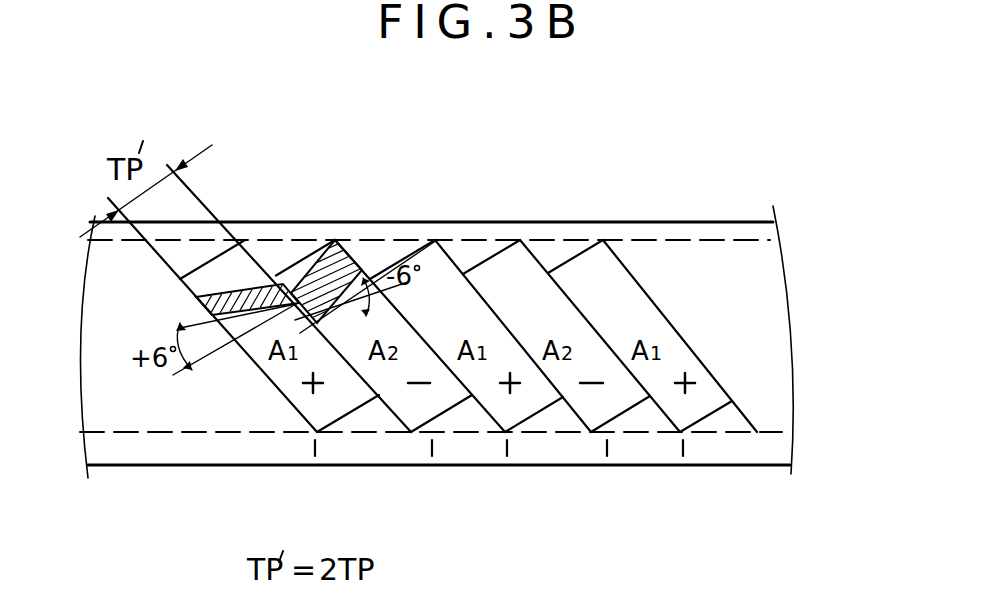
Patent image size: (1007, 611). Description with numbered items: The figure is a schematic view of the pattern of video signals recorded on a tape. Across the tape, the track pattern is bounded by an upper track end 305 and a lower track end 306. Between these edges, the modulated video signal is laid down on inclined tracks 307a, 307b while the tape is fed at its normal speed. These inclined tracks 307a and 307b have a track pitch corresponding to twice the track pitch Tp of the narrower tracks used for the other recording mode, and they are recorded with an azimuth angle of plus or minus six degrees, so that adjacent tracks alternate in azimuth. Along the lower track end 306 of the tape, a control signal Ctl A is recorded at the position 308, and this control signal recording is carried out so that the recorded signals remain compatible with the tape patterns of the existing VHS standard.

The upper track end 305 is at (635, 230).
The lower track end 306 is at (703, 452).
The inclined track 307a is at (240, 267).
The inclined track 307b is at (313, 268).
The control signal recording position 308 is at (508, 452).